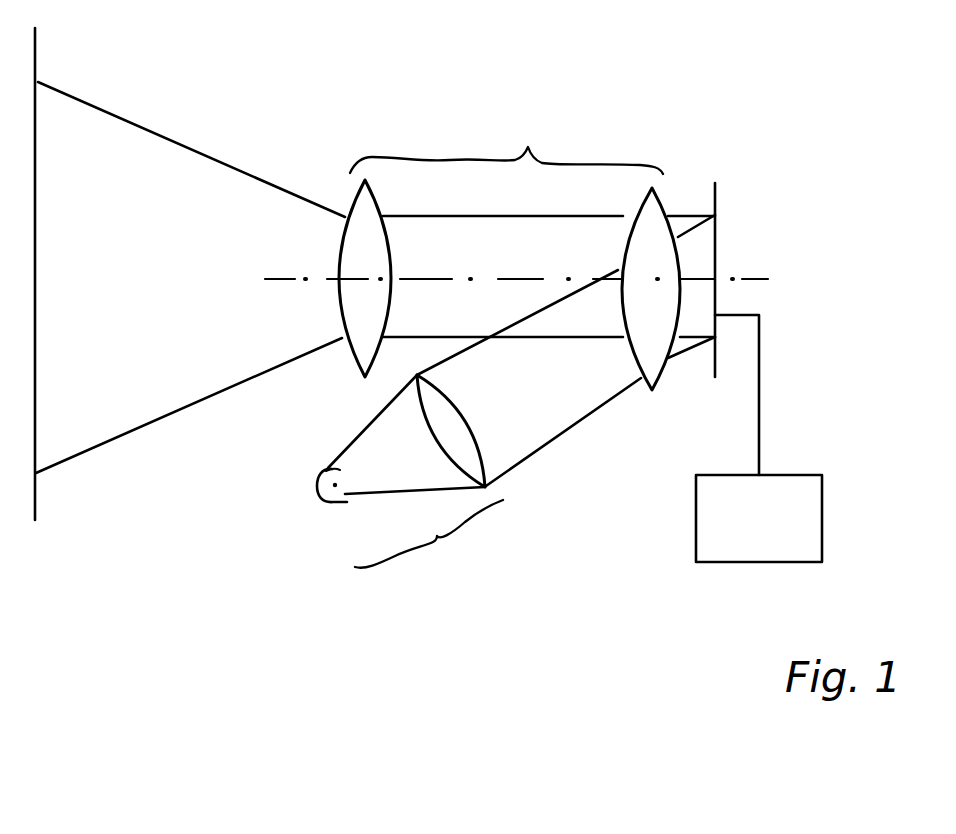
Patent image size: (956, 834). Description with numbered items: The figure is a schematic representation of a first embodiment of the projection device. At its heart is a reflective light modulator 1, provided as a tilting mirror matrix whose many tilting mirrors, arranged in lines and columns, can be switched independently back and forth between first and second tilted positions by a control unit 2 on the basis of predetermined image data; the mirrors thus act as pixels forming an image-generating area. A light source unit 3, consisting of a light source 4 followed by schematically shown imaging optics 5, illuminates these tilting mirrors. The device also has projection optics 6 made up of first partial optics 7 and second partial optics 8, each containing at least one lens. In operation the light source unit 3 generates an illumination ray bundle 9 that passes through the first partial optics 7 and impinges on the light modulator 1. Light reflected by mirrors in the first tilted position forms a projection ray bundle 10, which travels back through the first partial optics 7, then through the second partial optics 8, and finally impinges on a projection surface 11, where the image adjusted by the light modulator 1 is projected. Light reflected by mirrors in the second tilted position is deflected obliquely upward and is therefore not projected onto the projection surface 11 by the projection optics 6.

The reflective light modulator 1 is at (718, 192).
The control unit 2 is at (700, 561).
The light source unit 3 is at (429, 551).
The light source 4 is at (332, 505).
The imaging optics 5 is at (490, 487).
The projection optics 6 is at (506, 135).
The first partial optics 7 is at (657, 200).
The second partial optics 8 is at (348, 192).
The illumination ray bundle 9 is at (585, 404).
The projection ray bundle 10 is at (415, 337).
The projection surface 11 is at (38, 58).